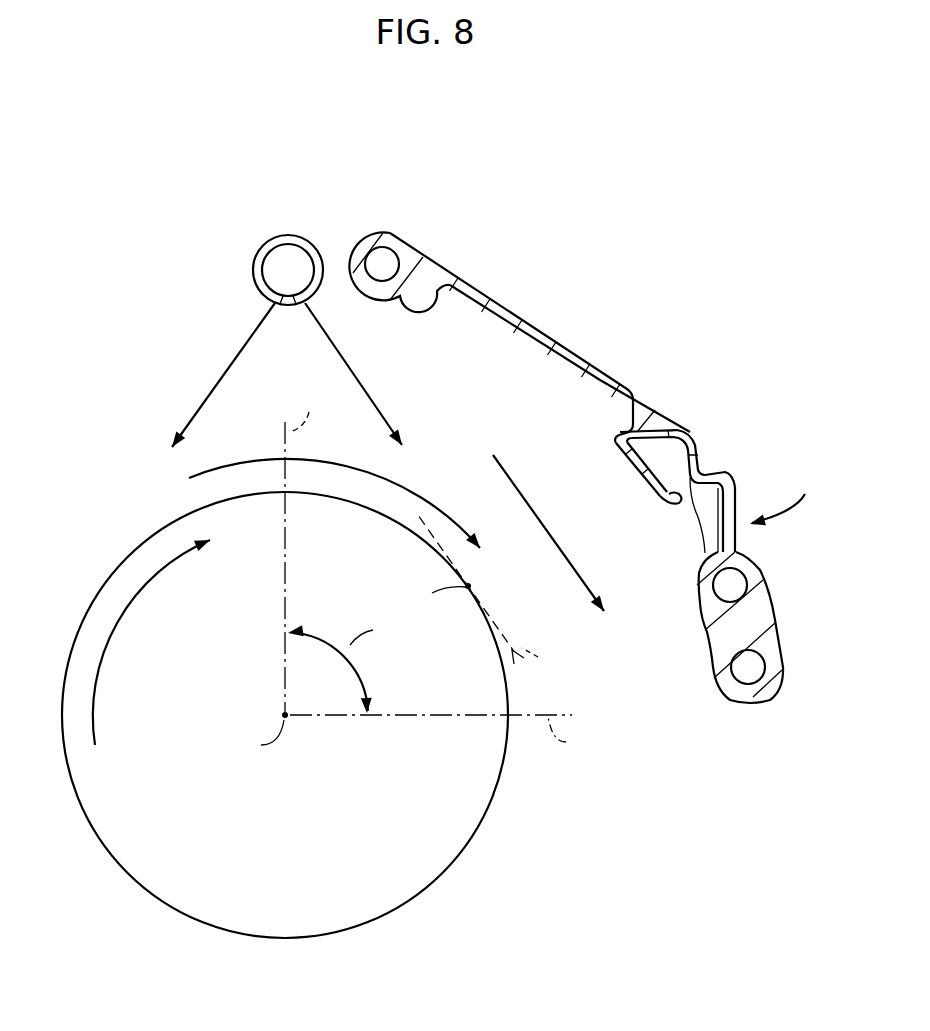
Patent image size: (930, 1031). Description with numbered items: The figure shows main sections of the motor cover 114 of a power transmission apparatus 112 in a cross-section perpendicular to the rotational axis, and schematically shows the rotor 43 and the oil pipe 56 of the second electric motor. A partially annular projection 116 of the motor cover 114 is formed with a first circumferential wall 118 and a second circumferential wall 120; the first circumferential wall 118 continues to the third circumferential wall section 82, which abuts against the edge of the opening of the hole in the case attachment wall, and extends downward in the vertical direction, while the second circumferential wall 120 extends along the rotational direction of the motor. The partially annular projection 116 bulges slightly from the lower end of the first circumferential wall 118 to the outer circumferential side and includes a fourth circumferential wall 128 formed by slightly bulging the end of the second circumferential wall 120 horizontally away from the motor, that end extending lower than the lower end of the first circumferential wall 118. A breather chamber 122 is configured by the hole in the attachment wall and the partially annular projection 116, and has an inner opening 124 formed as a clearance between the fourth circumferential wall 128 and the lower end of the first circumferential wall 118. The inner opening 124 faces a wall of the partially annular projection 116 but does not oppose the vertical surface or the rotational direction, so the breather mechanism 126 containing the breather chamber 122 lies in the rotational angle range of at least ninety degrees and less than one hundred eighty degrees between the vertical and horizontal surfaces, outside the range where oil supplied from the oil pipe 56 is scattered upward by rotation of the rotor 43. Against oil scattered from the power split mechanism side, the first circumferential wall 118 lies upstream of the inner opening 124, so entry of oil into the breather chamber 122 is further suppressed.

The power transmission apparatus 112 is at (157, 200).
The oil pipe 56 is at (292, 236).
The motor cover 114 is at (480, 283).
The partially annular projection 116 is at (512, 310).
The breather mechanism 126 is at (706, 354).
The third circumferential wall section 82 is at (659, 427).
The breather chamber 122 is at (662, 453).
The first circumferential wall 118 is at (699, 462).
The second circumferential wall 120 is at (625, 456).
The fourth circumferential wall 128 is at (672, 506).
The inner opening 124 is at (698, 520).
The rotor 43 is at (420, 880).